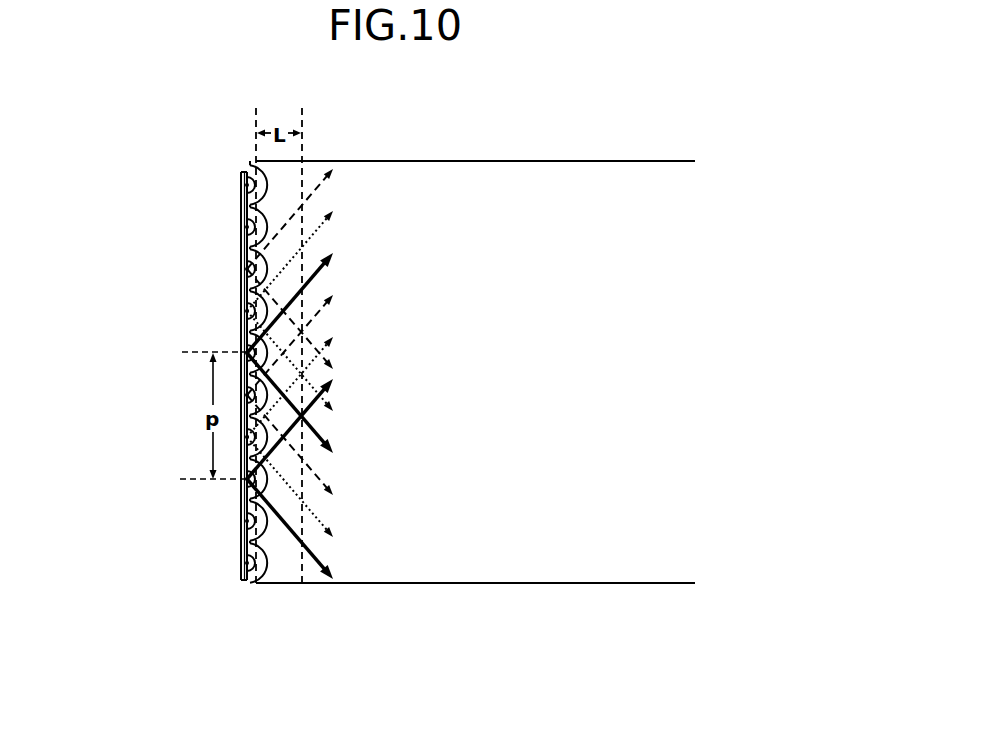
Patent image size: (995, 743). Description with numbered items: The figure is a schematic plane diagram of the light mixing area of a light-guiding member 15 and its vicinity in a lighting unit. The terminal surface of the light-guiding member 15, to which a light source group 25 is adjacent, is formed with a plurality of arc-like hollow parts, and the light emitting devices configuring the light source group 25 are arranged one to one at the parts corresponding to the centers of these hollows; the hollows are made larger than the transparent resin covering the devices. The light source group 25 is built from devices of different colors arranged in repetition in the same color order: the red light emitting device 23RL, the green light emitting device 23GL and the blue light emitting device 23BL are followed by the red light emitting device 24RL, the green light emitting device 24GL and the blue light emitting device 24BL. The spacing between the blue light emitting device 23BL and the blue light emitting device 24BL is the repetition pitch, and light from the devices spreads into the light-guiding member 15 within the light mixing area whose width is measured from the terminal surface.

The light-guiding member 15 is at (558, 187).
The light source group 25 is at (222, 240).
The blue light emitting device 24BL is at (242, 348).
The green light emitting device 24GL is at (242, 398).
The red light emitting device 24RL is at (242, 438).
The blue light emitting device 23BL is at (242, 481).
The green light emitting device 23GL is at (242, 522).
The red light emitting device 23RL is at (242, 563).